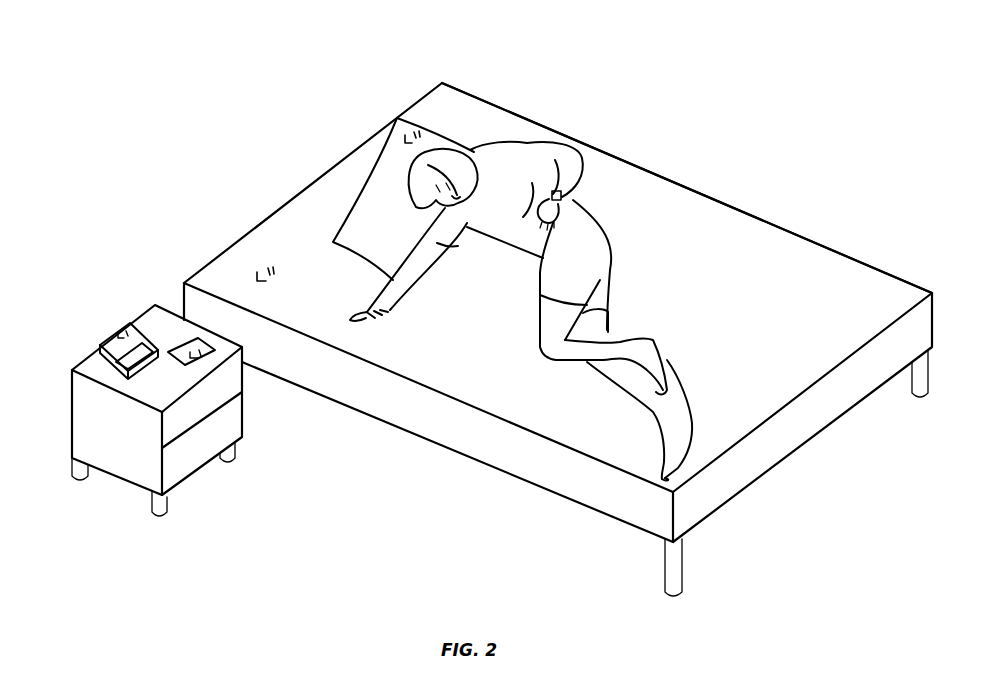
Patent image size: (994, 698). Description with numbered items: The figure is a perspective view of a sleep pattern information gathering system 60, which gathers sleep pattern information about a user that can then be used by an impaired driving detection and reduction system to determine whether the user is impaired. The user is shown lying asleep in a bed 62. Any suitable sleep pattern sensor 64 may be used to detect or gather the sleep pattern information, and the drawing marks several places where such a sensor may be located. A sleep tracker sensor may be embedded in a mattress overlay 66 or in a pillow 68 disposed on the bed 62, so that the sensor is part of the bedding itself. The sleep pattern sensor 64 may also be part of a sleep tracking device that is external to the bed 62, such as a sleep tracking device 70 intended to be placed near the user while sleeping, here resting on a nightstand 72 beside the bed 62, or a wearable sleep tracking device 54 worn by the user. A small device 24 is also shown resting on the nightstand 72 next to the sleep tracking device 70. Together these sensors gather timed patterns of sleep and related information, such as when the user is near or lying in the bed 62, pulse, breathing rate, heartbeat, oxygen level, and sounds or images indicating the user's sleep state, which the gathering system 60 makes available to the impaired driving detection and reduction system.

The sleep pattern information gathering system 60 is at (652, 58).
The bed 62 is at (803, 220).
The mattress overlay 66 is at (690, 186).
The pillow 68 is at (372, 177).
The wearable sleep tracking device 54 is at (550, 194).
The sleep pattern sensor 64 is at (397, 122).
The sleep tracking device 70 is at (108, 362).
The portable electronic device 24 is at (220, 358).
The nightstand 72 is at (203, 468).